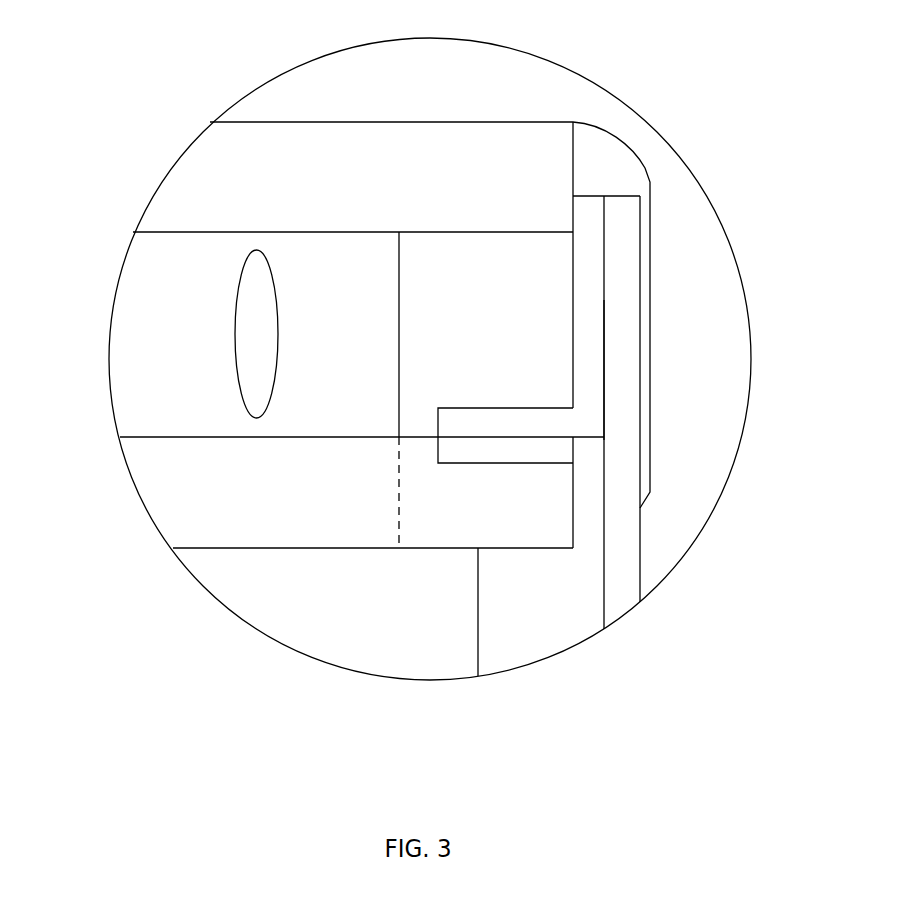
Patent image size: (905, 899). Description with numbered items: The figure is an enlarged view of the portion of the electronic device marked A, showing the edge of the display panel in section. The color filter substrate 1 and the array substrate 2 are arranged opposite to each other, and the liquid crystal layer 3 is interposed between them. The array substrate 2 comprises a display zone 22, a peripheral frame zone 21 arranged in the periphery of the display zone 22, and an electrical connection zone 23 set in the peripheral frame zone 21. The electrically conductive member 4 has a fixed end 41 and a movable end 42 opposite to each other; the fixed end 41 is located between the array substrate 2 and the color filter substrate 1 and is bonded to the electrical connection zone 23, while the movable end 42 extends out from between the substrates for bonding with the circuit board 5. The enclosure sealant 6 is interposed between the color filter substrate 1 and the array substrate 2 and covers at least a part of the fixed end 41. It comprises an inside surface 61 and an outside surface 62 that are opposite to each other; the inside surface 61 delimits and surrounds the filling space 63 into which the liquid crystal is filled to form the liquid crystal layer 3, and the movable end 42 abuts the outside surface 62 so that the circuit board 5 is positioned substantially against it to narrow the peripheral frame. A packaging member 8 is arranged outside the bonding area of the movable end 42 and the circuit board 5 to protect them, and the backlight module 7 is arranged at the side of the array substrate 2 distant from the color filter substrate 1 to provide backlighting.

The enlarged portion A is at (268, 78).
The color filter substrate 1 is at (182, 182).
The array substrate 2 is at (203, 662).
The peripheral frame zone 21 is at (462, 503).
The display zone 22 is at (302, 504).
The electrical connection zone 23 is at (517, 448).
The liquid crystal layer 3 is at (258, 343).
The electrically conductive member 4 is at (715, 400).
The fixed end 41 is at (503, 425).
The movable end 42 is at (587, 342).
The circuit board 5 is at (620, 563).
The enclosure sealant 6 is at (530, 277).
The inside surface 61 is at (398, 292).
The outside surface 62 is at (578, 300).
The filling space 63 is at (155, 268).
The backlight module 7 is at (398, 648).
The packaging member 8 is at (618, 168).